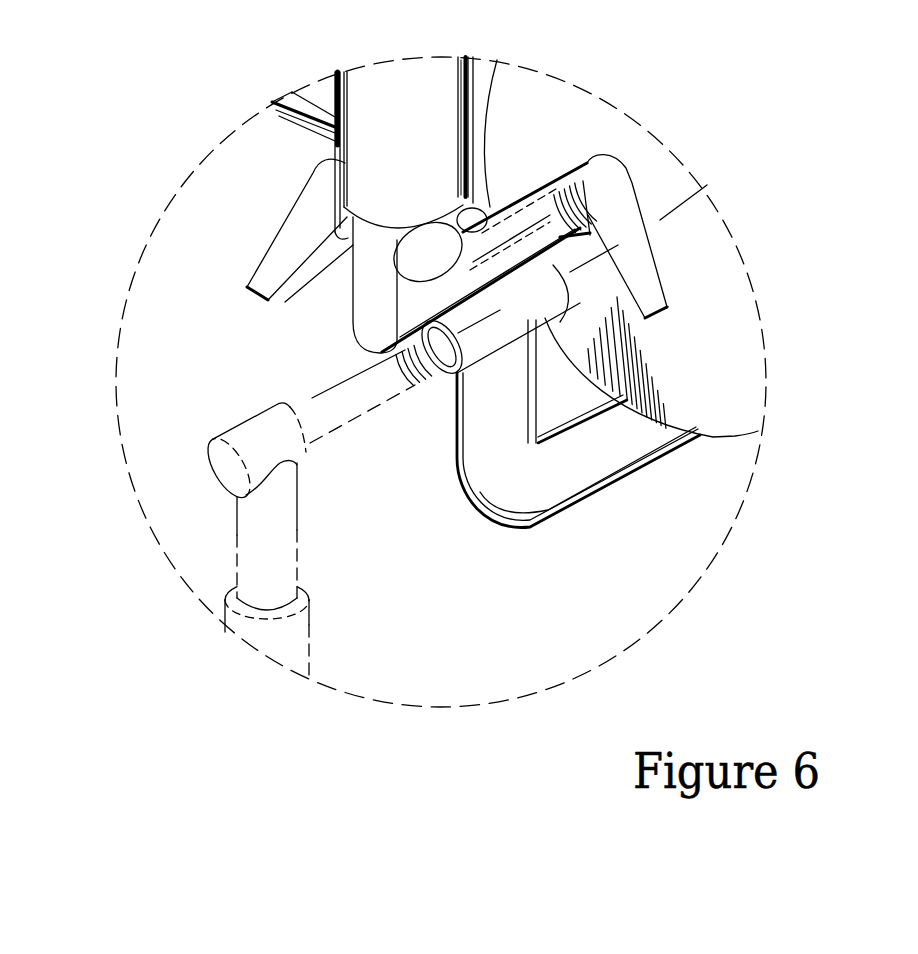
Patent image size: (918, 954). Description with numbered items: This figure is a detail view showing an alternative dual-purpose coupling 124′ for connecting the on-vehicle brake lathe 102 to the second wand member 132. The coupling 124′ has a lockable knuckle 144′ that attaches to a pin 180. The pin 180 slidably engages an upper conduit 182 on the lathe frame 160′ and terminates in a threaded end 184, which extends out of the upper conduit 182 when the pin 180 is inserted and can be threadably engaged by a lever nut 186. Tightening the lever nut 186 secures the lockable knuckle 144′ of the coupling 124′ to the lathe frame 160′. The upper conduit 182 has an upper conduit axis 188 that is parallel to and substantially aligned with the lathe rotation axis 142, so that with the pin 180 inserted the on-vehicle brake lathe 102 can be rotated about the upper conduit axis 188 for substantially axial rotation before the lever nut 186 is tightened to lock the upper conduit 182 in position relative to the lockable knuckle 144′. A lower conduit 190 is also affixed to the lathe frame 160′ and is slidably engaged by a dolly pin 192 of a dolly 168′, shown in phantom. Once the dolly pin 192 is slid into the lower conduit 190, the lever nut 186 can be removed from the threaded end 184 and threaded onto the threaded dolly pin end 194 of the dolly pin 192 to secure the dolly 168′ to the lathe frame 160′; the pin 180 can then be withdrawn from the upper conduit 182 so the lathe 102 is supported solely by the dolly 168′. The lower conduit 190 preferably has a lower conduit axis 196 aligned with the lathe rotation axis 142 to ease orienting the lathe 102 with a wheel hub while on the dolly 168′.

The on-vehicle brake lathe 102 is at (758, 431).
The coupling 124′ is at (223, 273).
The second wand member 132 is at (337, 90).
The lathe rotation axis 142 is at (670, 217).
The lockable knuckle 144′ is at (347, 217).
The lathe frame 160′ is at (600, 455).
The dolly 168′ is at (210, 558).
The pin 180 is at (525, 200).
The upper conduit 182 is at (464, 207).
The threaded end 184 is at (573, 187).
The lever nut 186 is at (577, 200).
The upper conduit axis 188 is at (632, 170).
The lower conduit 190 is at (548, 298).
The dolly pin 192 is at (310, 397).
The threaded dolly pin end 194 is at (396, 351).
The lower conduit axis 196 is at (512, 307).